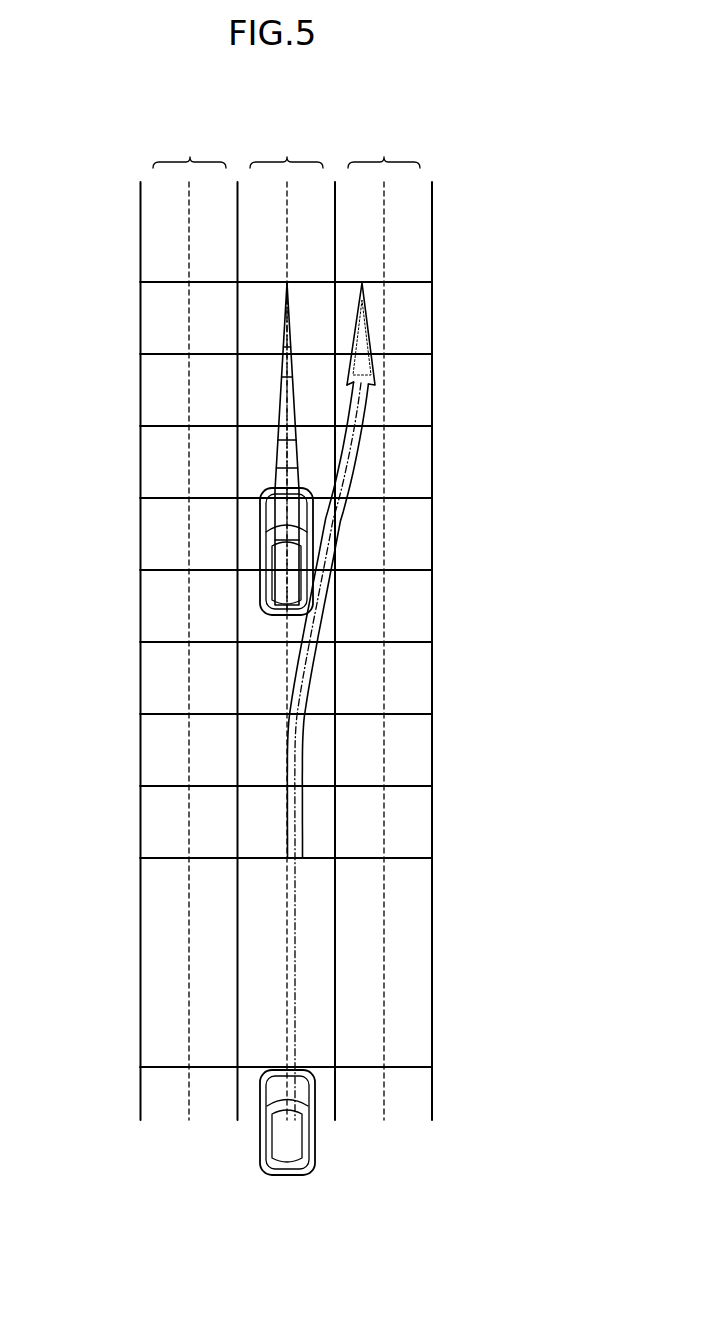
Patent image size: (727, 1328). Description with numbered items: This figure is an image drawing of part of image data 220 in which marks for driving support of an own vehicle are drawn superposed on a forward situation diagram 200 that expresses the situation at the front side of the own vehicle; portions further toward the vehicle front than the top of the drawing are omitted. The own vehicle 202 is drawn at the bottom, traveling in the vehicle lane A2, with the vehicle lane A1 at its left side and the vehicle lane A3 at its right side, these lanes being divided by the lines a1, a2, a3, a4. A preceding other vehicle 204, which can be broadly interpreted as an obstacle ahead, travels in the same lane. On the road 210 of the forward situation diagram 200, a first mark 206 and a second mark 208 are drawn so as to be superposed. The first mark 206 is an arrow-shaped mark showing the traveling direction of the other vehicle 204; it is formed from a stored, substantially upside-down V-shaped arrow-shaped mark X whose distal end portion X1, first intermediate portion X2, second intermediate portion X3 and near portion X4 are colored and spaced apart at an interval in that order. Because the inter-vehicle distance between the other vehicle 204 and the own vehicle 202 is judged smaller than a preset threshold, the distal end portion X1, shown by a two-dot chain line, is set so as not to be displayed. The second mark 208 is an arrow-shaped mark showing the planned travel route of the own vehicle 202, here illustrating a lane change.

The forward situation diagram 200 is at (311, 649).
The own vehicle 202 is at (262, 1143).
The preceding other vehicle 204 is at (262, 540).
The first mark 206 is at (186, 447).
The second mark 208 is at (352, 510).
The road 210 is at (408, 818).
The image data 220 is at (465, 307).
The arrow-shaped mark X is at (265, 410).
The distal end portion X1 is at (283, 344).
The first intermediate portion X2 is at (279, 390).
The second intermediate portion X3 is at (276, 465).
The near portion X4 is at (245, 571).
The vehicle lane A1 is at (189, 148).
The vehicle lane A2 is at (286, 148).
The vehicle lane A3 is at (384, 148).
The line a1 is at (140, 935).
The line a2 is at (238, 935).
The line a3 is at (335, 935).
The line a4 is at (432, 935).